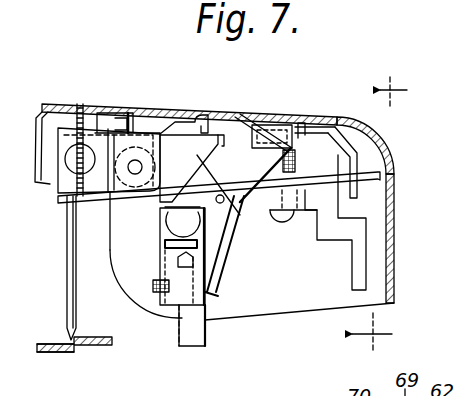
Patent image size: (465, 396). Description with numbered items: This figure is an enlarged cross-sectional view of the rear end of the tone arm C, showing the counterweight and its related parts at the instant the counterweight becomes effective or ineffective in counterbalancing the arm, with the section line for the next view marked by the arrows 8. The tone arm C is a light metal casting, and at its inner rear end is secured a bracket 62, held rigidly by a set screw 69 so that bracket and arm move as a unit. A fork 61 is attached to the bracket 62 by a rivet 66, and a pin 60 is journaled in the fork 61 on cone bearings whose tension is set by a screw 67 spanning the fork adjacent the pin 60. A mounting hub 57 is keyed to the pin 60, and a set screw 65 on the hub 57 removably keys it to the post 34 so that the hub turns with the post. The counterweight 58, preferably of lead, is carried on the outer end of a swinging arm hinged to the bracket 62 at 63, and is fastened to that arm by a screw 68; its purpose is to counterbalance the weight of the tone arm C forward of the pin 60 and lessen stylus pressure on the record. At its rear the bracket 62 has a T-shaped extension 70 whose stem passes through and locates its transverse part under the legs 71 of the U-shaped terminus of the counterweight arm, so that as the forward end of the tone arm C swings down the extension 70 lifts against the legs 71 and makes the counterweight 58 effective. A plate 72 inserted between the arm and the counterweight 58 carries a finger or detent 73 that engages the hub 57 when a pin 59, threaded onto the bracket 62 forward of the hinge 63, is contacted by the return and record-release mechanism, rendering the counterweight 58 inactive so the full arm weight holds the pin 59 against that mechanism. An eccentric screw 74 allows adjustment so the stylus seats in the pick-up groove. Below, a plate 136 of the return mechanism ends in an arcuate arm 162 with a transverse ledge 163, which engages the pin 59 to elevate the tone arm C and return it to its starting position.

The bracket 62 is at (300, 124).
The T-shaped extension 70 is at (356, 150).
The tone arm C is at (400, 165).
The section line 8- 8 is at (379, 210).
The legs 71 is at (382, 185).
The eccentric screw 74 is at (113, 120).
The hinge 63 is at (137, 160).
The set screw 69 is at (205, 116).
The rivet 66 is at (258, 135).
The fork 61 is at (212, 172).
The screw 67 is at (224, 196).
The finger or detent 73 is at (225, 270).
The pin 60 is at (180, 220).
The mounting hub 57 is at (170, 262).
The set screw 65 is at (155, 287).
The post 34 is at (182, 326).
The pin 59 is at (70, 246).
The plate 72 is at (291, 220).
The screw 68 is at (290, 228).
The counterweight 58 is at (332, 236).
The plate 136 is at (101, 348).
The arcuate shaped extending arm 162 is at (43, 341).
The transverse ledge 163 is at (73, 347).